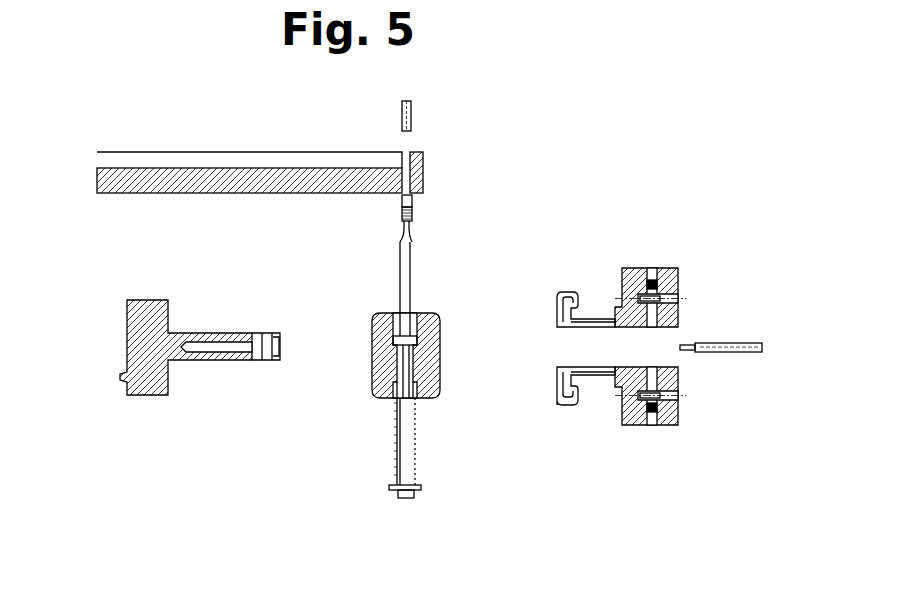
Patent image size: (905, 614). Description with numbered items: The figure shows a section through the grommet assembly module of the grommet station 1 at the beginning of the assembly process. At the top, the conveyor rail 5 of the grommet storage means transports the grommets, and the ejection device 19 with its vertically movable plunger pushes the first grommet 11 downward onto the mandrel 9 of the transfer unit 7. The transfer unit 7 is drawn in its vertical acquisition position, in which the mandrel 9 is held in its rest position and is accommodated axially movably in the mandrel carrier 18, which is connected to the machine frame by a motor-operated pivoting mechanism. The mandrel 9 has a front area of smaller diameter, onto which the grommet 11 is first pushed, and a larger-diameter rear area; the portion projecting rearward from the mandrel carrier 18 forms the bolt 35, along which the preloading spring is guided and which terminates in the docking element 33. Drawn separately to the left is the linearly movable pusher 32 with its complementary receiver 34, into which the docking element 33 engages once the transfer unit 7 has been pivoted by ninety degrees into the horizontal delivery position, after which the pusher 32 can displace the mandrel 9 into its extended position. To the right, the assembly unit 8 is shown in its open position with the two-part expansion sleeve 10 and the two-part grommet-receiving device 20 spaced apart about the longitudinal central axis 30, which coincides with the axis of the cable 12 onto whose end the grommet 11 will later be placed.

The grommet station 1 is at (128, 74).
The conveyor rail 5 is at (110, 180).
The transfer unit 7 is at (363, 312).
The assembly unit 8 is at (633, 245).
The mandrel 9 is at (406, 280).
The expansion sleeve 10 is at (585, 318).
The grommet 11 is at (410, 213).
The cable 12 is at (733, 347).
The mandrel carrier 18 is at (428, 357).
The ejection device 19 is at (411, 112).
The grommet-receiving device 20 is at (668, 265).
The longitudinal central axis 30 is at (764, 347).
The pusher 32 is at (143, 383).
The docking element 33 is at (405, 488).
The receiver 34 is at (268, 350).
The bolt 35 is at (408, 460).